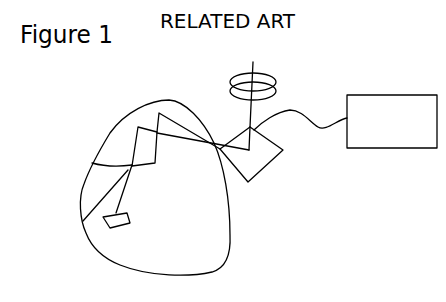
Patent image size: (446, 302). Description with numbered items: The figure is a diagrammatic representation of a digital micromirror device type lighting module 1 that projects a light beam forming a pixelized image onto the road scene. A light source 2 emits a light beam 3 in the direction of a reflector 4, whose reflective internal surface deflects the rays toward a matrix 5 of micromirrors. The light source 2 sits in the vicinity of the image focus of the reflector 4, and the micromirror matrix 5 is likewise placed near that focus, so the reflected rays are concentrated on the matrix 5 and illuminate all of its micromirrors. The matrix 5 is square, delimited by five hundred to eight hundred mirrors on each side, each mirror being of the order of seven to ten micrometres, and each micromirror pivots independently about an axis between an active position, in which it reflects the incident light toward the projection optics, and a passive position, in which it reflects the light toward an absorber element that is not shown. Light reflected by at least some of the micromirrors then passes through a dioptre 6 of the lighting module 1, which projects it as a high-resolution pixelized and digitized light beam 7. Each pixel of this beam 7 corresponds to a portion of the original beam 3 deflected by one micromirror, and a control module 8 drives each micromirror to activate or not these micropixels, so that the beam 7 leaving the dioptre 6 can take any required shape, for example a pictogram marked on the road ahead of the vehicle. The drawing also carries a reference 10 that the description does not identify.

The lighting module 1 is at (297, 215).
The light source 2 is at (103, 222).
The light beam 3 is at (92, 160).
The reflector 4 is at (228, 273).
The matrix of micromirrors 5 is at (283, 150).
The dioptre 6 is at (277, 87).
The pixelized light beam 7 is at (254, 63).
The control module 8 is at (345, 121).
The medical system 10 is at (433, 298).